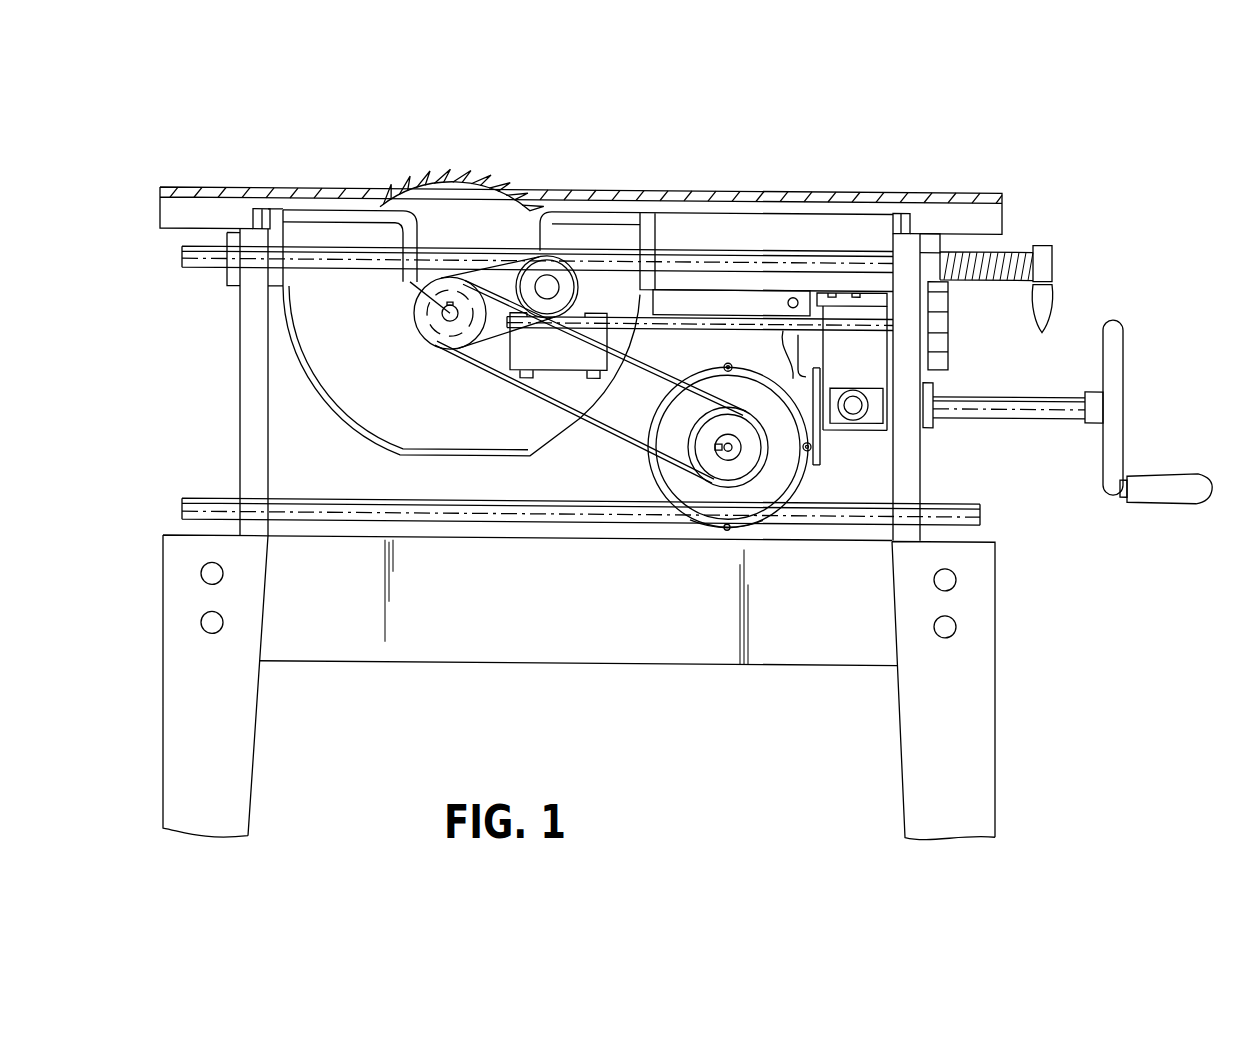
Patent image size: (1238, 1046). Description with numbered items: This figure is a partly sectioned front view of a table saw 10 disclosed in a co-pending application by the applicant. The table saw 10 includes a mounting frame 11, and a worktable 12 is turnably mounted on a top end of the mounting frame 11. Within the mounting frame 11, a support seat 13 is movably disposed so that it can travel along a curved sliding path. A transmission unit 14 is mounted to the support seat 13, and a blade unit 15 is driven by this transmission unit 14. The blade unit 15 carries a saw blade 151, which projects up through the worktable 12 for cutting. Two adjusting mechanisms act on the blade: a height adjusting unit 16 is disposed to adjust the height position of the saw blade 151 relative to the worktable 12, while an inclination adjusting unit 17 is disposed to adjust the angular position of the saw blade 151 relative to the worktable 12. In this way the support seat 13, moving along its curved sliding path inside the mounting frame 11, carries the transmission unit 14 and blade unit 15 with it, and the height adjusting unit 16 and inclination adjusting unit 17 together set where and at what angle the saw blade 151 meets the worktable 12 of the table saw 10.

The table saw 10 is at (968, 184).
The mounting frame 11 is at (238, 415).
The worktable 12 is at (196, 186).
The support seat 13 is at (291, 351).
The transmission unit 14 is at (638, 472).
The blade unit 15 is at (586, 275).
The saw blade 151 is at (441, 176).
The height adjusting unit 16 is at (948, 352).
The inclination adjusting unit 17 is at (1125, 337).